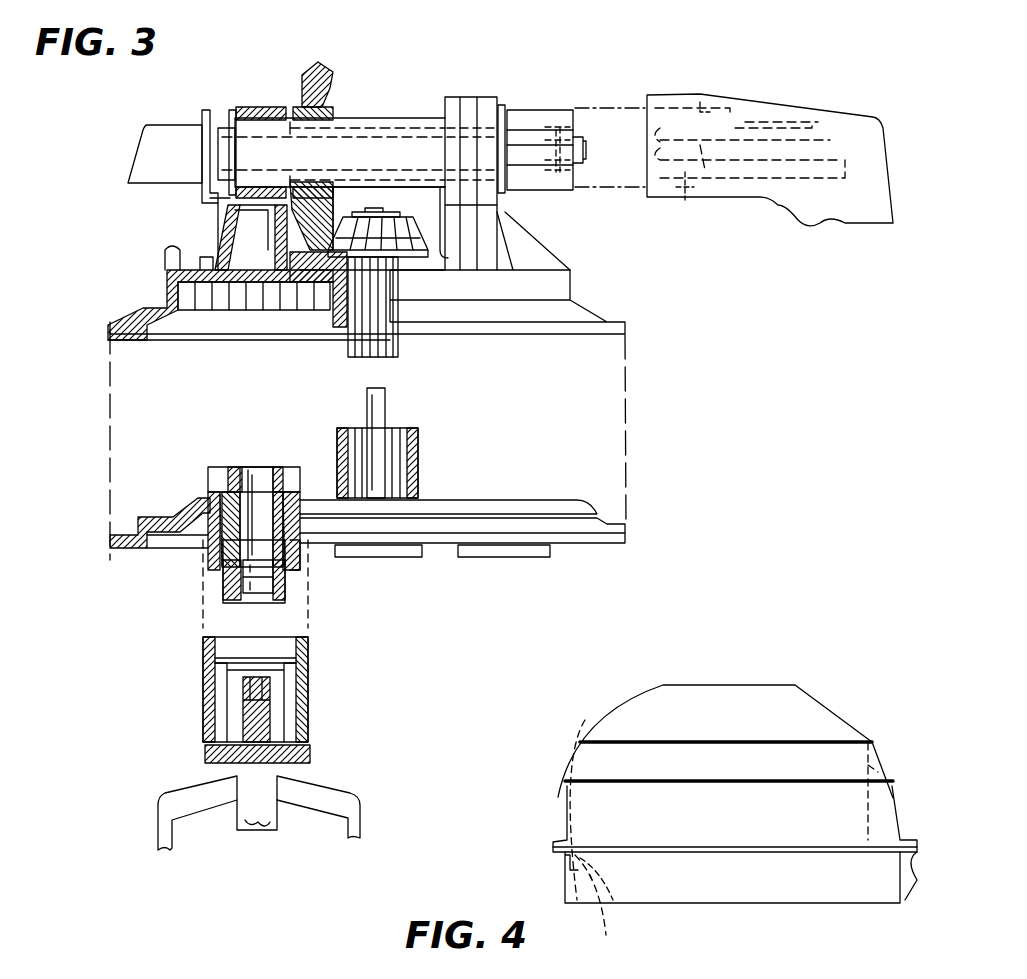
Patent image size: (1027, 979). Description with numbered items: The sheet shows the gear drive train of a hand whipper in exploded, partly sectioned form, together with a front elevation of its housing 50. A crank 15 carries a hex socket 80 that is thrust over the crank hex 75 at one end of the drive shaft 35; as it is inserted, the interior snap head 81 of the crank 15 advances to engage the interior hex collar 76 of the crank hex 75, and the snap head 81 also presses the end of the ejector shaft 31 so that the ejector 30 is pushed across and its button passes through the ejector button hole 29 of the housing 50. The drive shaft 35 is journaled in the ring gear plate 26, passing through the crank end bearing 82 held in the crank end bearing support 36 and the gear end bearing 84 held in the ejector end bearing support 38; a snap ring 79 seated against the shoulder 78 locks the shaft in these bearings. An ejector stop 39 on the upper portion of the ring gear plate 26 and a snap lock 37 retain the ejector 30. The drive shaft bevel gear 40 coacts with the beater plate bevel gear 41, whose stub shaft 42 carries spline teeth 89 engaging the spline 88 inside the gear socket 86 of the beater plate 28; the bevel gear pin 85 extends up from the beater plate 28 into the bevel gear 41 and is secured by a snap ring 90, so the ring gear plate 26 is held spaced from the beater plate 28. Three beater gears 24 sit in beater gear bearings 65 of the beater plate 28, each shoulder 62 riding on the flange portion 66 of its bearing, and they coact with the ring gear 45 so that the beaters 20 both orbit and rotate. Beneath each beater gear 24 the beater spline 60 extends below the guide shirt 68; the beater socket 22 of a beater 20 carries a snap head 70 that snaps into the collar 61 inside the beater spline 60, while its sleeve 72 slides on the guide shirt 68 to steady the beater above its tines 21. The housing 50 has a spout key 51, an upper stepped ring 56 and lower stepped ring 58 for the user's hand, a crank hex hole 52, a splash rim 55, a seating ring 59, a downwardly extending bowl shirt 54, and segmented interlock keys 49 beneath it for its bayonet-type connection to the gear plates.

In FIG. 3, the crank 15 is at (868, 110).
In FIG. 3, the beaters 20 is at (195, 778).
In FIG. 3, the legs 21 is at (160, 850).
In FIG. 3, the beater socket 22 is at (310, 750).
In FIG. 3, the beater gears 24 is at (220, 468).
In FIG. 3, the ring gear plate 26 is at (580, 290).
In FIG. 3, the beater plate 28 is at (368, 445).
In FIG. 4, the ejector button hole 29 is at (570, 755).
In FIG. 3, the ejector 30 is at (162, 116).
In FIG. 3, the ejector shaft 31 is at (586, 146).
In FIG. 3, the drive shaft 35 is at (408, 118).
In FIG. 3, the crank end bearing support 36 is at (498, 235).
In FIG. 3, the snap lock 37 is at (160, 278).
In FIG. 3, the ejector end bearing support 38 is at (230, 225).
In FIG. 3, the ejector stop 39 is at (168, 262).
In FIG. 3, the drive shaft bevel gear 40 is at (335, 68).
In FIG. 3, the beater plate bevel gear 41 is at (432, 258).
In FIG. 3, the stub shaft 42 is at (333, 315).
In FIG. 3, the ring gear 45 is at (237, 300).
In FIG. 4, the interlock keys 49 is at (586, 906).
In FIG. 4, the housing 50 is at (740, 685).
In FIG. 4, the spout key 51 is at (917, 880).
In FIG. 4, the crank hex hole 52 is at (880, 755).
In FIG. 4, the bowl shirt 54 is at (735, 895).
In FIG. 4, the splash rim 55 is at (555, 848).
In FIG. 4, the upper stepped ring 56 is at (583, 743).
In FIG. 4, the lower stepped ring 58 is at (567, 782).
In FIG. 4, the seating ring 59 is at (618, 895).
In FIG. 3, the beater spline 60 is at (225, 590).
In FIG. 3, the collar 61 is at (262, 580).
In FIG. 3, the shoulder 62 is at (295, 470).
In FIG. 3, the beater gear bearings 65 is at (222, 558).
In FIG. 3, the flange portion 66 is at (210, 497).
In FIG. 3, the guide shirt 68 is at (300, 550).
In FIG. 3, the snap head 70 is at (270, 695).
In FIG. 3, the sleeve 72 is at (210, 655).
In FIG. 3, the crank hex 75 is at (570, 78).
In FIG. 3, the interior hex collar 76 is at (565, 115).
In FIG. 3, the shoulder 78 is at (501, 105).
In FIG. 3, the snap ring 79 is at (232, 110).
In FIG. 3, the hex socket 80 is at (700, 100).
In FIG. 3, the snap head 81 is at (690, 200).
In FIG. 3, the crank end bearing 82 is at (486, 97).
In FIG. 3, the gear end bearing 84 is at (270, 107).
In FIG. 3, the bevel gear pin 85 is at (388, 395).
In FIG. 3, the gear socket 86 is at (367, 501).
In FIG. 3, the spline 88 is at (400, 430).
In FIG. 3, the spline teeth 89 is at (355, 340).
In FIG. 3, the snap ring 90 is at (385, 208).